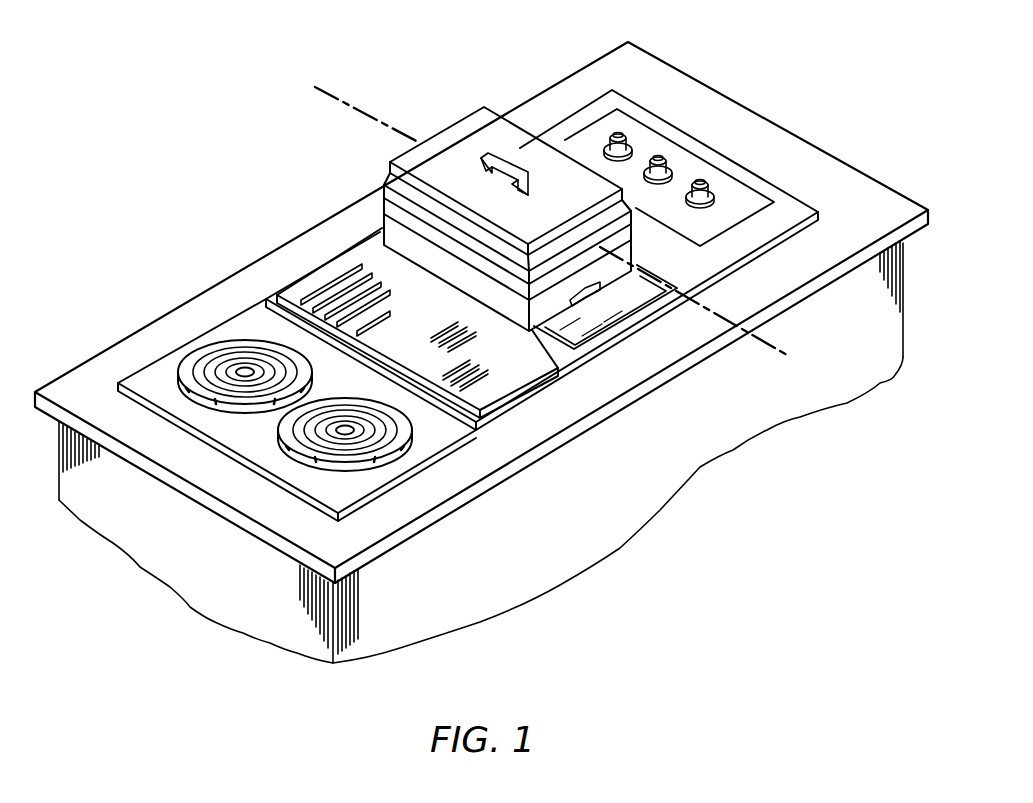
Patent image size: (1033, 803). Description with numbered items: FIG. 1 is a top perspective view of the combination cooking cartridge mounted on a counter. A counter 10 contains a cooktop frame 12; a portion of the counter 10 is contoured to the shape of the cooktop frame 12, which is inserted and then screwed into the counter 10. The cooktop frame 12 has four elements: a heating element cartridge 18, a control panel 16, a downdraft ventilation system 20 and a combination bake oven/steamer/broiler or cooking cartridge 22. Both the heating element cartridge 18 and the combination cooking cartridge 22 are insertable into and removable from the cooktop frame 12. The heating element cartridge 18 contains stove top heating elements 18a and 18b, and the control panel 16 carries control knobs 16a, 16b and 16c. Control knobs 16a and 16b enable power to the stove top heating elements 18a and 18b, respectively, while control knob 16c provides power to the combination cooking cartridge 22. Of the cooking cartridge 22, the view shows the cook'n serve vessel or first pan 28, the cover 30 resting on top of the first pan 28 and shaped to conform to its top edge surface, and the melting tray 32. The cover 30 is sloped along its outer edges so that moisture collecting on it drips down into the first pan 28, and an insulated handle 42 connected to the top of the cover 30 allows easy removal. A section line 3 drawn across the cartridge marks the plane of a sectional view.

The section line 3- 3 is at (305, 108).
The counter 10 is at (266, 260).
The cooktop frame 12 is at (624, 80).
The control panel 16 is at (718, 140).
The control knob 16a is at (620, 138).
The control knob 16b is at (660, 160).
The control knob 16c is at (703, 184).
The heating element cartridge 18 is at (222, 328).
The stove top heating element 18a is at (248, 404).
The stove top heating element 18b is at (335, 460).
The downdraft ventilation system 20 is at (352, 258).
The combination cooking cartridge 22 is at (507, 196).
The first pan 28 is at (460, 275).
The cover 30 is at (507, 180).
The melting tray 32 is at (620, 313).
The insulated handle 42 is at (522, 166).